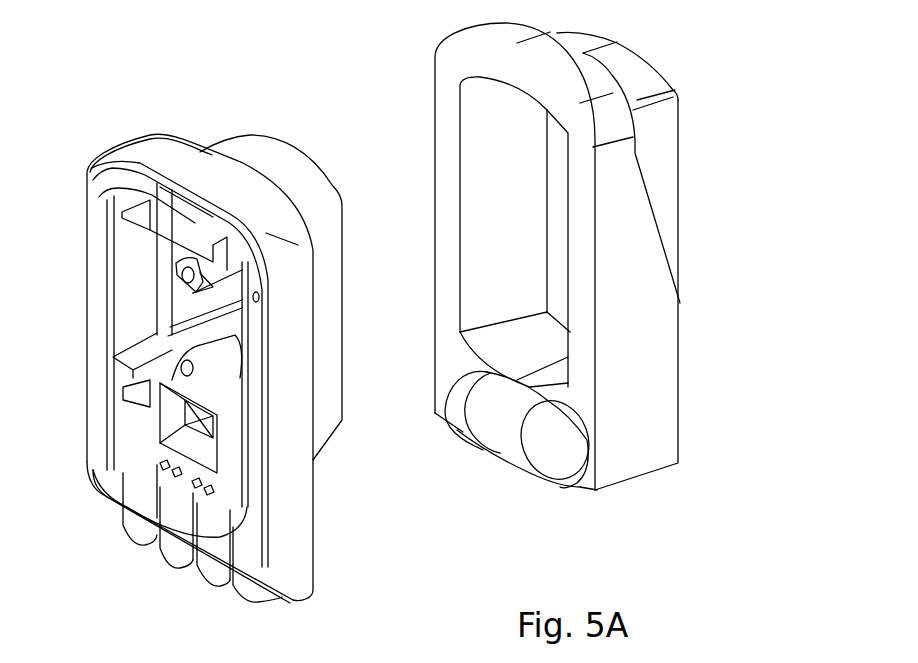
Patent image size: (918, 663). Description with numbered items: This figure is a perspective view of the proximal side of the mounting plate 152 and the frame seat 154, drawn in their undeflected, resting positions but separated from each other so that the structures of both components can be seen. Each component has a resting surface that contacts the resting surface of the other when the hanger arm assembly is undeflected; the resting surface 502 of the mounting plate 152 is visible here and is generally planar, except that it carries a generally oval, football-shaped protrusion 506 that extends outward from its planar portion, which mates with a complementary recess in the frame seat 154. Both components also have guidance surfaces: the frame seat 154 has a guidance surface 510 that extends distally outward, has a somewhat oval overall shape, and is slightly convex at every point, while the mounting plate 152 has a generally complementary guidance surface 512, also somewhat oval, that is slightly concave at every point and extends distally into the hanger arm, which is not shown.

The frame seat 154 is at (123, 100).
The guidance surface 510 is at (327, 265).
The mounting plate 152 is at (697, 63).
The resting surface 502 is at (447, 56).
The guidance surface 512 is at (473, 118).
The protrusion 506 is at (500, 447).